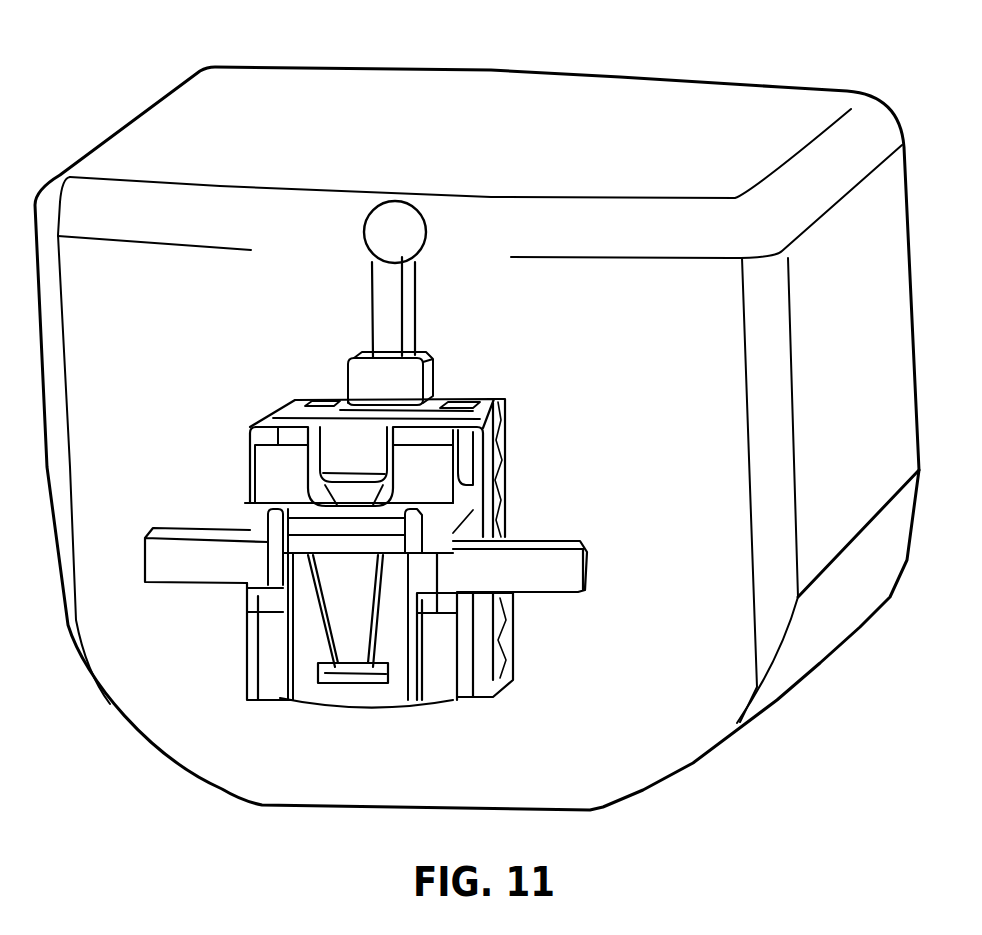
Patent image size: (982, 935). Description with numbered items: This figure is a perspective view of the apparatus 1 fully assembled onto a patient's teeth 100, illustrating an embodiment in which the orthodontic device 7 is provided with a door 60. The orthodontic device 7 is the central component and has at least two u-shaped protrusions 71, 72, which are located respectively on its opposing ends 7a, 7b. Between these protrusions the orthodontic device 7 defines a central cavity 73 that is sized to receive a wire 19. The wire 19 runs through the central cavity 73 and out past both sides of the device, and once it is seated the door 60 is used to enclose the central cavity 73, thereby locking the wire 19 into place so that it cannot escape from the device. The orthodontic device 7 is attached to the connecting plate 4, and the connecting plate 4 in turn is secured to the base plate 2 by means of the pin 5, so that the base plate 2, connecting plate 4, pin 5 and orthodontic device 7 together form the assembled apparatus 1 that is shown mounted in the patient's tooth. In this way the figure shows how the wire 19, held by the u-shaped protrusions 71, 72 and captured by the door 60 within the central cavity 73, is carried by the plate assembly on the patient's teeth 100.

The patient's teeth 100 is at (631, 95).
The apparatus 1 is at (553, 400).
The base plate 2 is at (503, 400).
The connecting plate 4 is at (260, 466).
The pin 5 is at (417, 308).
The orthodontic device 7 is at (251, 645).
The end of the orthodontic device 7a is at (277, 423).
The end of the orthodontic device 7b is at (258, 692).
The wire 19 is at (171, 576).
The door 60 is at (325, 703).
The u-shaped protrusion 71 is at (360, 465).
The u-shaped protrusion 72 is at (385, 703).
The central cavity 73 is at (507, 522).